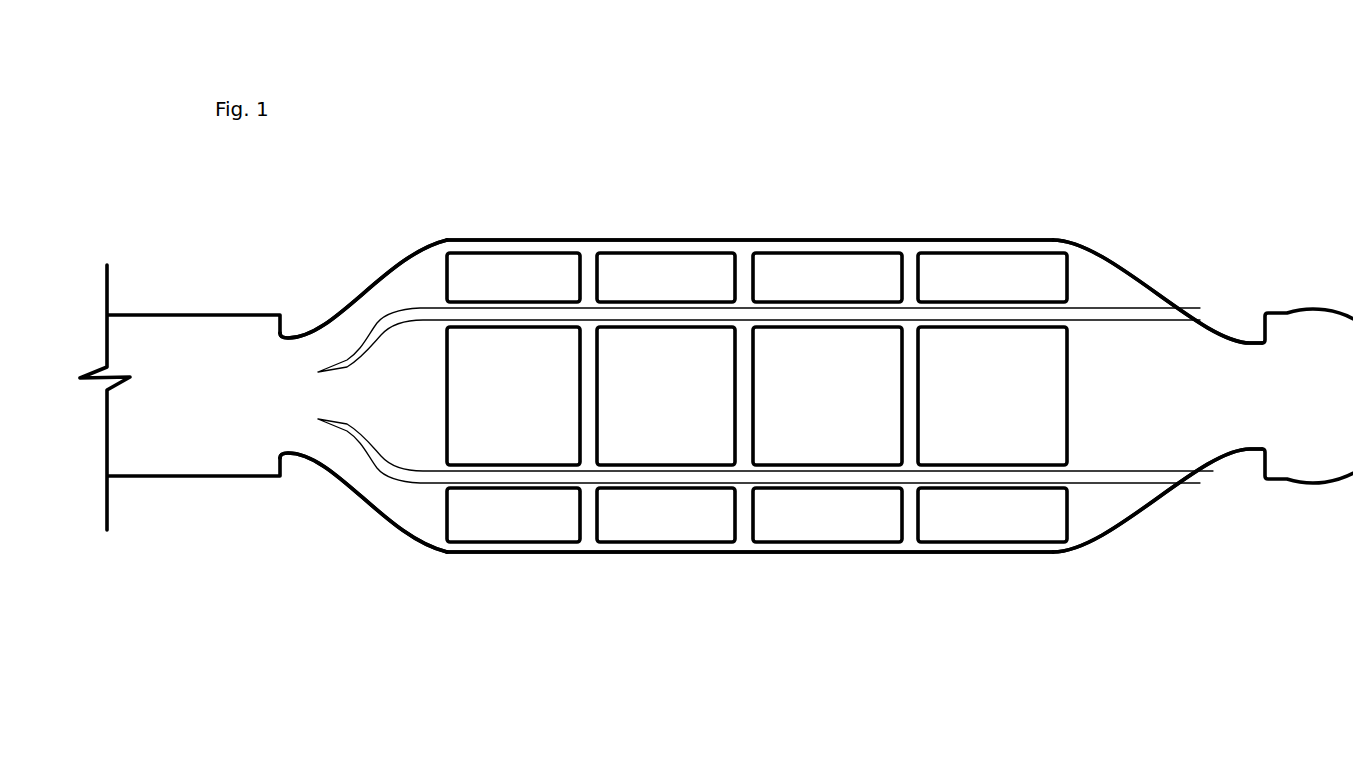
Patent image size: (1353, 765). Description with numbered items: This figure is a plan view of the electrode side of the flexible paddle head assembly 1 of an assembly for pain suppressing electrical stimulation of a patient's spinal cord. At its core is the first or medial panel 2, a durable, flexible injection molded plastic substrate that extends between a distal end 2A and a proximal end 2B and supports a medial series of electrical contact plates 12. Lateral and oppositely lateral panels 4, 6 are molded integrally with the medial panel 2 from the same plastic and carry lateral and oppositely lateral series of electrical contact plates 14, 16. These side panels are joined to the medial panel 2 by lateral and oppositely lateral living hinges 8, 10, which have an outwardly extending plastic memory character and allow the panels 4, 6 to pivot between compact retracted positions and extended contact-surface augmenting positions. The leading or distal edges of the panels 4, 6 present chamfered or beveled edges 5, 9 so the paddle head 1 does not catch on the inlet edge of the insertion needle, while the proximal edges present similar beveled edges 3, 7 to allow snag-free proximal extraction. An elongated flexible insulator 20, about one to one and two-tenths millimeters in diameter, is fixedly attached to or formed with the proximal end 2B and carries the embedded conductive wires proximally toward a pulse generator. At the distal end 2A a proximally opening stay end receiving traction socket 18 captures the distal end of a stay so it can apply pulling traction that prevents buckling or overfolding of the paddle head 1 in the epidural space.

The paddle head assembly 1 is at (770, 160).
The first or medial panel 2 is at (1150, 407).
The distal end of medial panel 2A is at (1213, 403).
The proximal end of medial panel 2B is at (343, 392).
The chamfered or beveled proximal edge of lateral panel 3 is at (372, 263).
The lateral panel 4 is at (590, 250).
The chamfered or beveled distal edge of lateral panel 5 is at (1160, 283).
The oppositely lateral panel 6 is at (910, 537).
The chamfered or beveled proximal edge of oppositely lateral panel 7 is at (373, 510).
The lateral living hinge 8 is at (821, 315).
The chamfered or beveled distal edge of oppositely lateral panel 9 is at (1170, 498).
The oppositely lateral living hinge 10 is at (953, 477).
The medial series of electrical contact plates 12 is at (646, 433).
The lateral series of electrical contact plates 14 is at (478, 275).
The oppositely lateral series of electrical contact plates 16 is at (810, 520).
The stay end receiving traction socket 18 is at (1312, 347).
The flexible insulator 20 is at (182, 455).